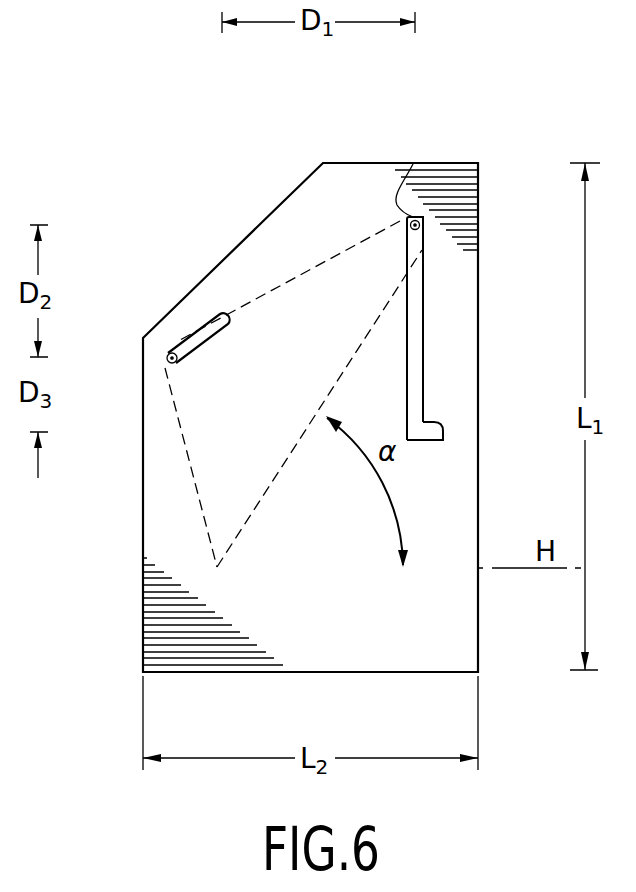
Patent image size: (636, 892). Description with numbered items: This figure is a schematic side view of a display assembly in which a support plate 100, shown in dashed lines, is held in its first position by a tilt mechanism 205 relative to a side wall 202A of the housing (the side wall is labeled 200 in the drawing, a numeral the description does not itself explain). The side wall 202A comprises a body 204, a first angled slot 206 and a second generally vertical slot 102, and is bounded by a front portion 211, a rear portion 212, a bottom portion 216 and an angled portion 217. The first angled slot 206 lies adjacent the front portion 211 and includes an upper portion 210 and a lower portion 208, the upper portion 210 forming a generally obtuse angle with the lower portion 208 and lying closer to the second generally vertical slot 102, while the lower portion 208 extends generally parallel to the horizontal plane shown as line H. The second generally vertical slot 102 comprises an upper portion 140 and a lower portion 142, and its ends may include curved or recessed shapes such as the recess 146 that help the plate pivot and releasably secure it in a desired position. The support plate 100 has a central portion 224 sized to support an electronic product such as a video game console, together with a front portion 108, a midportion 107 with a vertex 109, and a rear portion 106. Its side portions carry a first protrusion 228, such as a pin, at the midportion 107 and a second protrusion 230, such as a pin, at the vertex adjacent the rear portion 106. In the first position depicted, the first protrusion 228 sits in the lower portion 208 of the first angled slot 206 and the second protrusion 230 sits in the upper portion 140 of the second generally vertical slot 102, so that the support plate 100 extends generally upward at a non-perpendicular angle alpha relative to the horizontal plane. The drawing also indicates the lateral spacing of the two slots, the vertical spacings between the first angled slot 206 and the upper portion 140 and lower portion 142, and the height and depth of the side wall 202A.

The support plate 100 is at (299, 479).
The second generally vertical slot 102 is at (428, 323).
The rear portion 106 is at (422, 223).
The midportion 107 is at (307, 325).
The front portion 108 is at (232, 537).
The vertex 109 is at (183, 340).
The upper portion 140 is at (413, 164).
The lower portion 142 is at (430, 443).
The recess 146 is at (446, 426).
The card body 200 is at (336, 150).
The side wall 202A is at (478, 618).
The body 204 is at (403, 621).
The tilt mechanism 205 is at (150, 200).
The first angled slot 206 is at (203, 370).
The lower portion 208 is at (170, 365).
The upper portion 210 is at (227, 313).
The front portion 211 is at (142, 533).
The rear portion 212 is at (478, 385).
The bottom portion 216 is at (388, 674).
The angled portion 217 is at (255, 228).
The central portion 224 is at (318, 417).
The first protrusion 228 is at (167, 355).
The second protrusion 230 is at (447, 222).